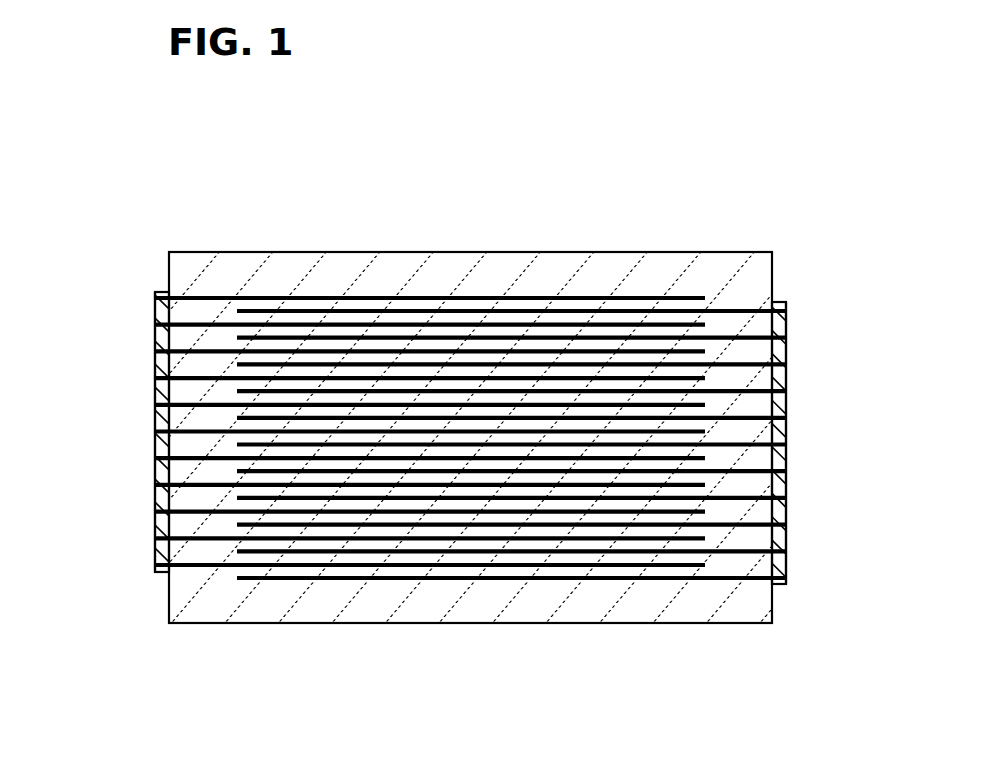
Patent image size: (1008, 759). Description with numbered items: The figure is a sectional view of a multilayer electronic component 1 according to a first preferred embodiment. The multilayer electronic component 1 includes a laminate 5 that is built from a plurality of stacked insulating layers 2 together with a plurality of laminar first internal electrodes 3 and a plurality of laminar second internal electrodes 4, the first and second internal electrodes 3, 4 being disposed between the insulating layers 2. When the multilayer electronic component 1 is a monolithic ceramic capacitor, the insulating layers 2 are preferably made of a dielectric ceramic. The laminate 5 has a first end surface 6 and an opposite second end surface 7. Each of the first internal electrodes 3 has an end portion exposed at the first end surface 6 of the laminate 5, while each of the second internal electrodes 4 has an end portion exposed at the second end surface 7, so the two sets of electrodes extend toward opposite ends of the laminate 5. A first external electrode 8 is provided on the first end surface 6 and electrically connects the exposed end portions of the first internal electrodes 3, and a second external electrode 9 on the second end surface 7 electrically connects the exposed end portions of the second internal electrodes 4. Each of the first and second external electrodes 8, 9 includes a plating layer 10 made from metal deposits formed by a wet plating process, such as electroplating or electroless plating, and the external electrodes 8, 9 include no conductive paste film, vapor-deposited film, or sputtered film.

The multilayer electronic component 1 is at (146, 150).
The insulating layers 2 is at (425, 558).
The first internal electrodes 3 is at (388, 325).
The second internal electrodes 4 is at (497, 338).
The laminate 5 is at (649, 243).
The first end surface 6 is at (162, 470).
The second end surface 7 is at (775, 480).
The first external electrode 8 is at (147, 398).
The second external electrode 9 is at (794, 378).
The plating layer 10 is at (163, 340).